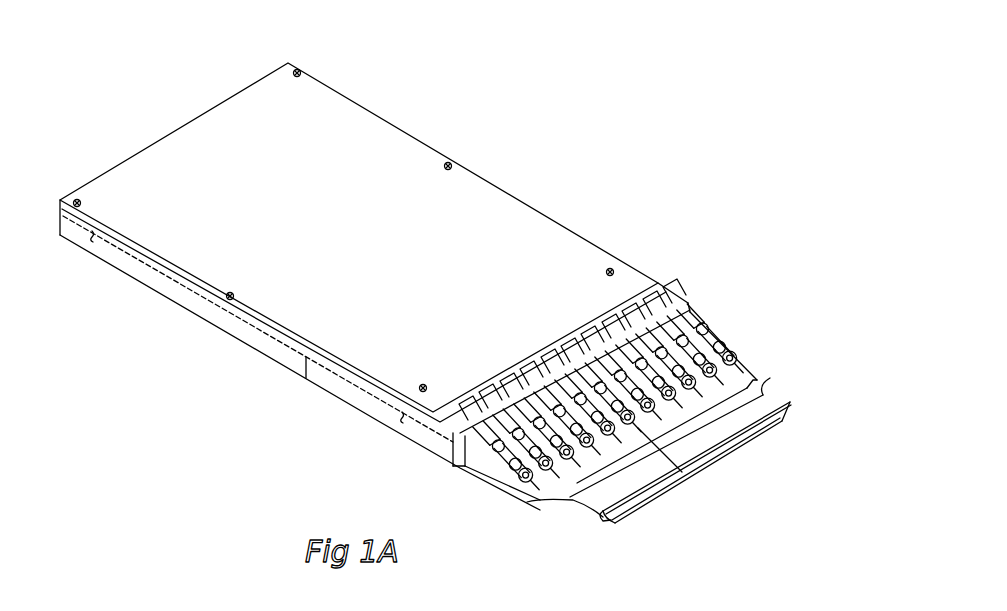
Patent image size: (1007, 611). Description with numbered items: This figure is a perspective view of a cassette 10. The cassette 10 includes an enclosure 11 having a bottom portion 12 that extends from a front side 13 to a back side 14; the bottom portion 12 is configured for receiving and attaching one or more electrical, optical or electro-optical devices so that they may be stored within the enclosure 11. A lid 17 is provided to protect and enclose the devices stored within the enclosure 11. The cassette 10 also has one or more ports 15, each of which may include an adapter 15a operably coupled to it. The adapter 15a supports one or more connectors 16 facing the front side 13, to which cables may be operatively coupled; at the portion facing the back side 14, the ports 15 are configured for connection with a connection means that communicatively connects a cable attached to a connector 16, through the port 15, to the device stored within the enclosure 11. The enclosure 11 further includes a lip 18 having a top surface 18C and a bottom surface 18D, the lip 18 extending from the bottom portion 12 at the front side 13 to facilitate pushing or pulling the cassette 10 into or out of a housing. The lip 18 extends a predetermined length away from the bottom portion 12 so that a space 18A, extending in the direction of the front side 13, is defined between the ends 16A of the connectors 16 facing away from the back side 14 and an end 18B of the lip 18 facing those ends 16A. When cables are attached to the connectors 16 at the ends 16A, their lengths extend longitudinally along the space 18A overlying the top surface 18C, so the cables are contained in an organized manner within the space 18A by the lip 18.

The cassette 10 is at (546, 78).
The enclosure 11 is at (152, 276).
The bottom portion 12 is at (208, 323).
The front side 13 is at (703, 470).
The back side 14 is at (178, 126).
The port 15 is at (672, 302).
The adapter 15a is at (690, 310).
The connector 16 is at (707, 340).
The end of connector 16A is at (527, 502).
The lid 17 is at (494, 207).
The lip 18 is at (793, 411).
The space 18A is at (645, 440).
The end of lip 18B is at (610, 516).
The top surface of lip 18C is at (770, 378).
The bottom surface of lip 18D is at (607, 518).